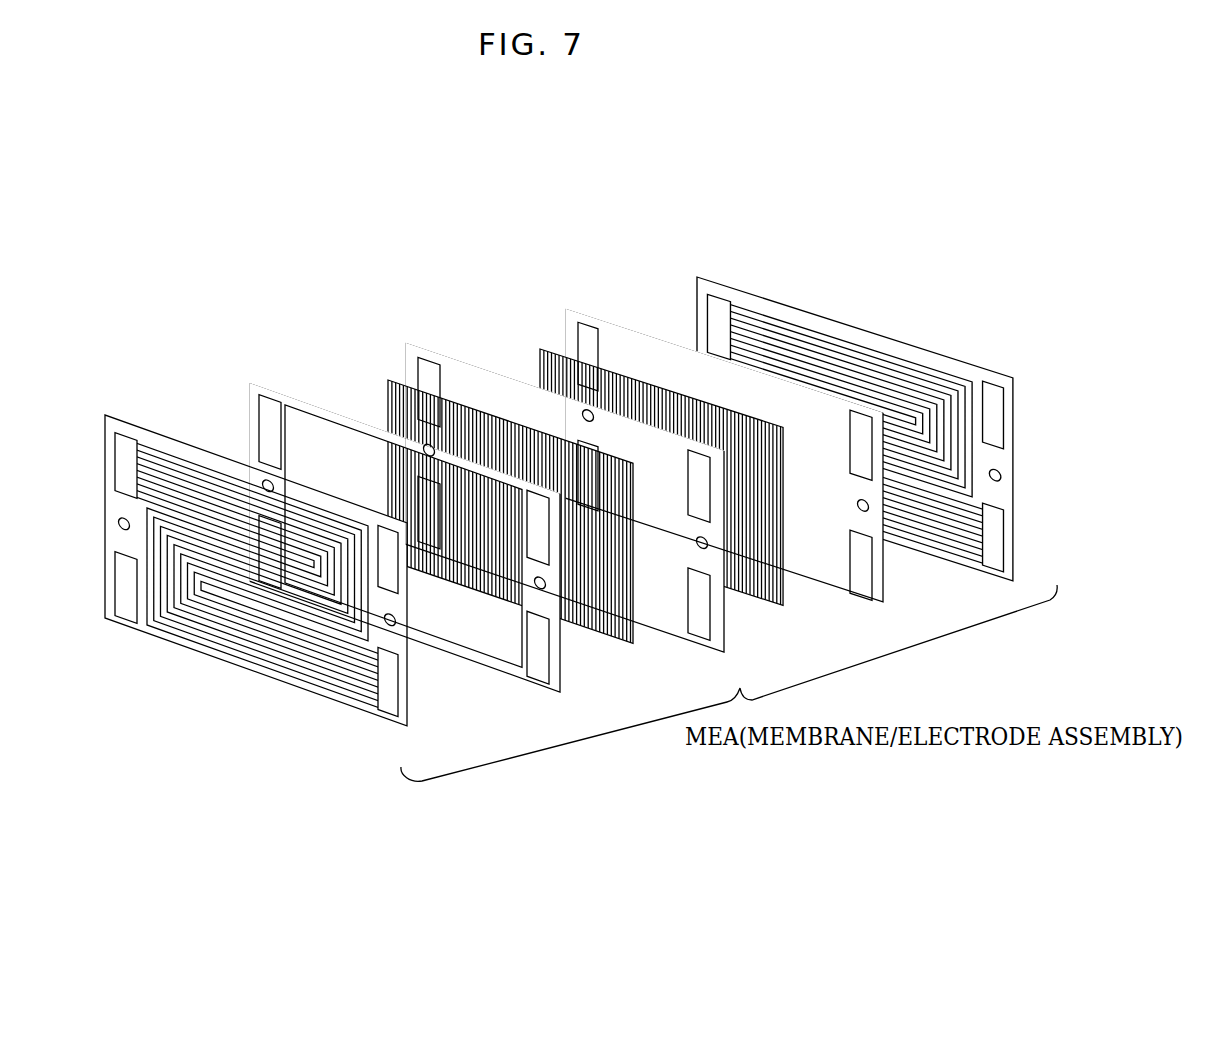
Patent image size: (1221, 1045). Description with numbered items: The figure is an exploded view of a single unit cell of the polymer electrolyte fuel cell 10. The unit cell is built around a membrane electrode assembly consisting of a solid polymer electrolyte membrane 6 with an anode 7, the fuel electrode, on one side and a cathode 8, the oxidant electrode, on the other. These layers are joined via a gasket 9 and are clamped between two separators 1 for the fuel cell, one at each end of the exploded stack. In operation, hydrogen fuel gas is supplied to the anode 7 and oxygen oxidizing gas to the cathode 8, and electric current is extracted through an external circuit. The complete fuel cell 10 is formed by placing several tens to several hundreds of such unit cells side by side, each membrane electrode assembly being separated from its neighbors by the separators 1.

The separator 1 is at (133, 425).
The solid polymer electrolyte membrane 6 is at (418, 346).
The anode 7 is at (266, 388).
The cathode 8 is at (578, 312).
The gasket 9 is at (597, 632).
The fuel cell 10 is at (559, 421).